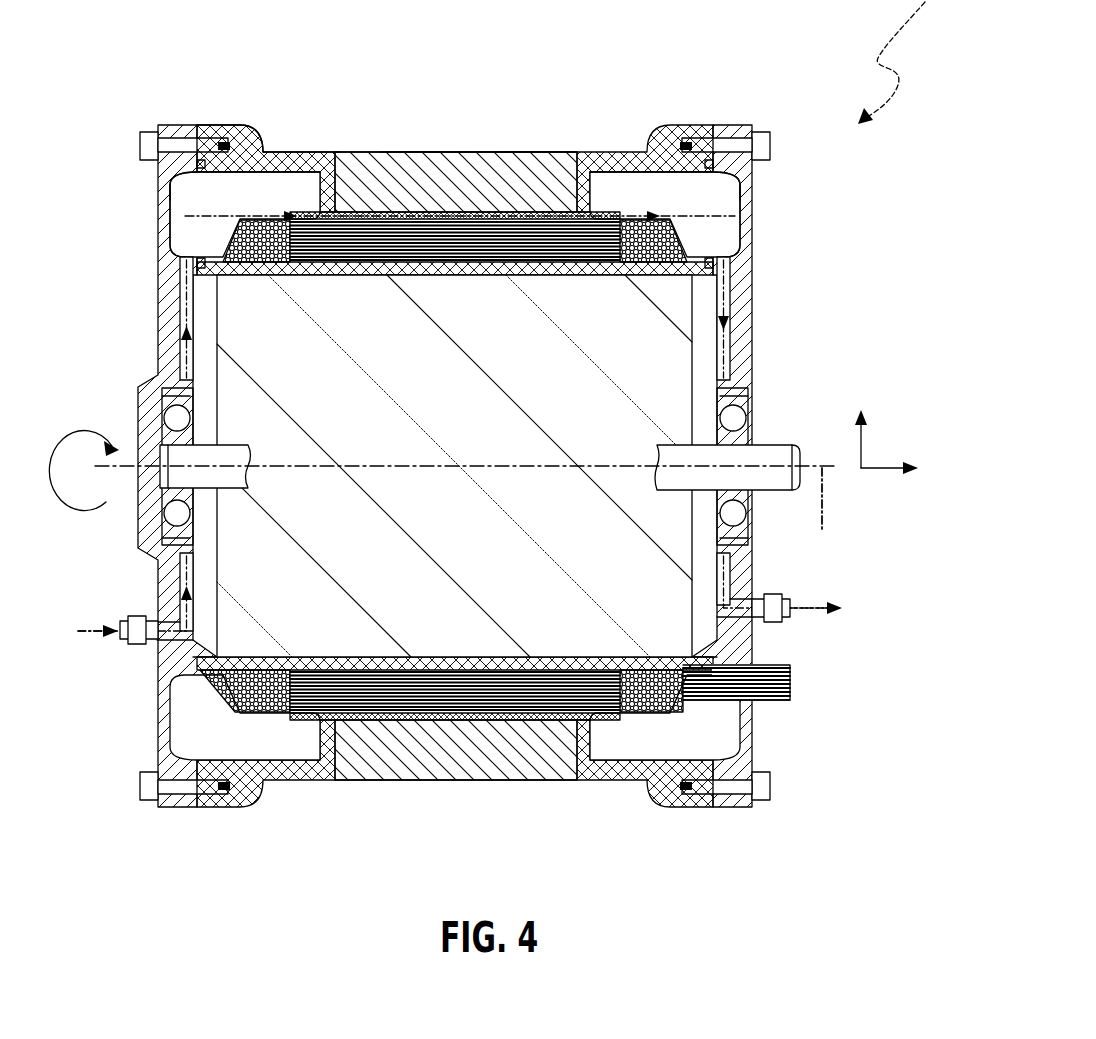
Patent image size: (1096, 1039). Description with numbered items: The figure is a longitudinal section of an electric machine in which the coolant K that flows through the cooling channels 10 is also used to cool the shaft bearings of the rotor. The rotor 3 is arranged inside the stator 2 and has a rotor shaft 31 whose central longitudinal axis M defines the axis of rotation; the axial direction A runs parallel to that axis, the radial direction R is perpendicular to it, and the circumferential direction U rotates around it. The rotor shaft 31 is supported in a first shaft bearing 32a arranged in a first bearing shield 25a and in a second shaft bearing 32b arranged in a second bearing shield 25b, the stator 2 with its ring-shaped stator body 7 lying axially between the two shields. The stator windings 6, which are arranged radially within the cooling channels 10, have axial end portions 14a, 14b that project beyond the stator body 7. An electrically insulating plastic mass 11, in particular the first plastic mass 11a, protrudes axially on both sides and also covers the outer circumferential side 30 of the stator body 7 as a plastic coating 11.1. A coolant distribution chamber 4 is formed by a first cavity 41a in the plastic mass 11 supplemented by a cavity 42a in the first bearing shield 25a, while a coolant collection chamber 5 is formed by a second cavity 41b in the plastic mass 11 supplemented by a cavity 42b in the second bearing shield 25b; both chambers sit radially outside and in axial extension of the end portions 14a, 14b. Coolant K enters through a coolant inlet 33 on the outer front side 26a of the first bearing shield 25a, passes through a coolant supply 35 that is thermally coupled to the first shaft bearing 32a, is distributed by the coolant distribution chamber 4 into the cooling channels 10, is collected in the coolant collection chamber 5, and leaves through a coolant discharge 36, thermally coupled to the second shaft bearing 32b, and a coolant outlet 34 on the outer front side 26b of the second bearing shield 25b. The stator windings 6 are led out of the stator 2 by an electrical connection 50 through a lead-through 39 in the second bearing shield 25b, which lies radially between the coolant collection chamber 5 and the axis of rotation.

The stator 2 is at (535, 152).
The rotor 3 is at (447, 429).
The coolant distribution chamber 4 is at (234, 204).
The coolant collection chamber 5 is at (692, 204).
The stator winding 6 is at (592, 276).
The stator body 7 is at (447, 152).
The cooling channel 10 is at (358, 207).
The plastic mass 11 is at (610, 152).
The first plastic mass 11a is at (315, 150).
The plastic coating 11.1 is at (493, 150).
The first axial end portion of the stator winding 14a is at (222, 240).
The second axial end portion of the stator winding 14b is at (688, 240).
The first bearing shield 25a is at (158, 308).
The second bearing shield 25b is at (752, 308).
The outer front side of the first bearing shield 26a is at (158, 350).
The outer front side of the second bearing shield 26b is at (753, 350).
The outer circumferential side of the stator body 30 is at (413, 150).
The rotor shaft 31 is at (775, 490).
The first shaft bearing 32a is at (162, 392).
The second shaft bearing 32b is at (750, 395).
The coolant inlet 33 is at (128, 644).
The coolant outlet 34 is at (790, 622).
The coolant supply 35 is at (190, 266).
The coolant discharge 36 is at (718, 266).
The lead-through 39 is at (772, 700).
The first cavity 41a is at (263, 193).
The second cavity 41b is at (660, 190).
The cavity in the first bearing shield 42a is at (183, 200).
The cavity in the second bearing shield 42b is at (730, 207).
The electrical connection 50 is at (792, 686).
The circumferential direction U is at (98, 508).
The coolant K is at (98, 631).
The radial direction R is at (864, 446).
The axial direction A is at (883, 472).
The central longitudinal axis M is at (834, 517).